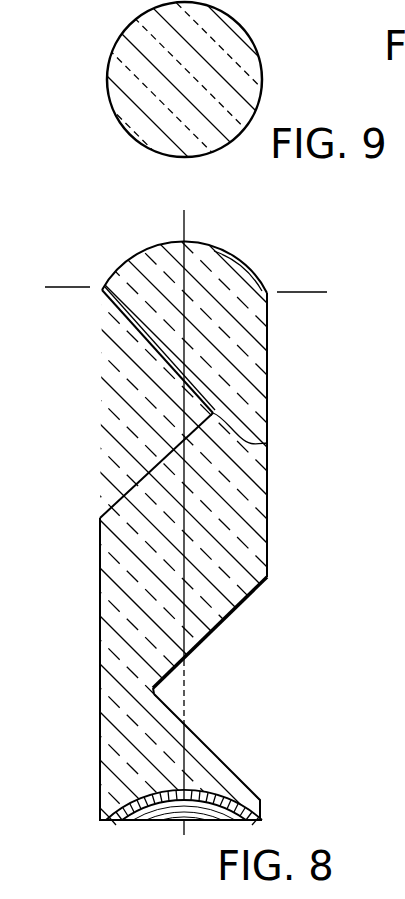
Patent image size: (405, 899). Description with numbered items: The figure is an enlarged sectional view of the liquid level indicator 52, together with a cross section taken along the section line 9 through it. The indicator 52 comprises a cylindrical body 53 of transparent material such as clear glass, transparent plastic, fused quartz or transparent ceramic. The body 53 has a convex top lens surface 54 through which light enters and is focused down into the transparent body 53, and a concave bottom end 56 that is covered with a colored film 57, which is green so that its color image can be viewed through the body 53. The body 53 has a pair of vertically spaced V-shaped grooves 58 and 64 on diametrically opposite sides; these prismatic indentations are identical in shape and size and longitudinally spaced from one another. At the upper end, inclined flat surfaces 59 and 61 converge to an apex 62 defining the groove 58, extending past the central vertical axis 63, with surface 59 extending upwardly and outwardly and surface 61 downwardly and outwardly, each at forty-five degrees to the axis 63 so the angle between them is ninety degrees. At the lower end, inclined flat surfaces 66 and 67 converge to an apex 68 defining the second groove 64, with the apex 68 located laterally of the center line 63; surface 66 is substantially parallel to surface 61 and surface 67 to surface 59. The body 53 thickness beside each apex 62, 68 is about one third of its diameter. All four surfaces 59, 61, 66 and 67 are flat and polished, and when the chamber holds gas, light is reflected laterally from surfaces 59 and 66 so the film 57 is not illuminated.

In FIG. 8, the liquid level indicator 52 is at (97, 211).
In FIG. 9, the cylindrical body 53 is at (245, 68).
In FIG. 8, the cylindrical body 53 is at (267, 532).
In FIG. 8, the top lens surface 54 is at (138, 254).
In FIG. 8, the bottom end 56 is at (140, 784).
In FIG. 8, the colored film 57 is at (139, 820).
In FIG. 8, the V-shaped groove 58 is at (152, 402).
In FIG. 8, the inclined flat surface 59 is at (135, 327).
In FIG. 8, the inclined flat surface 61 is at (130, 485).
In FIG. 8, the apex 62 is at (267, 443).
In FIG. 8, the central vertical axis 63 is at (186, 221).
In FIG. 8, the second V-shaped groove 64 is at (220, 688).
In FIG. 8, the inclined flat surface 66 is at (227, 617).
In FIG. 8, the inclined flat surface 67 is at (227, 760).
In FIG. 8, the apex 68 is at (152, 687).
In FIG. 8, the section line 9- 9 is at (60, 280).